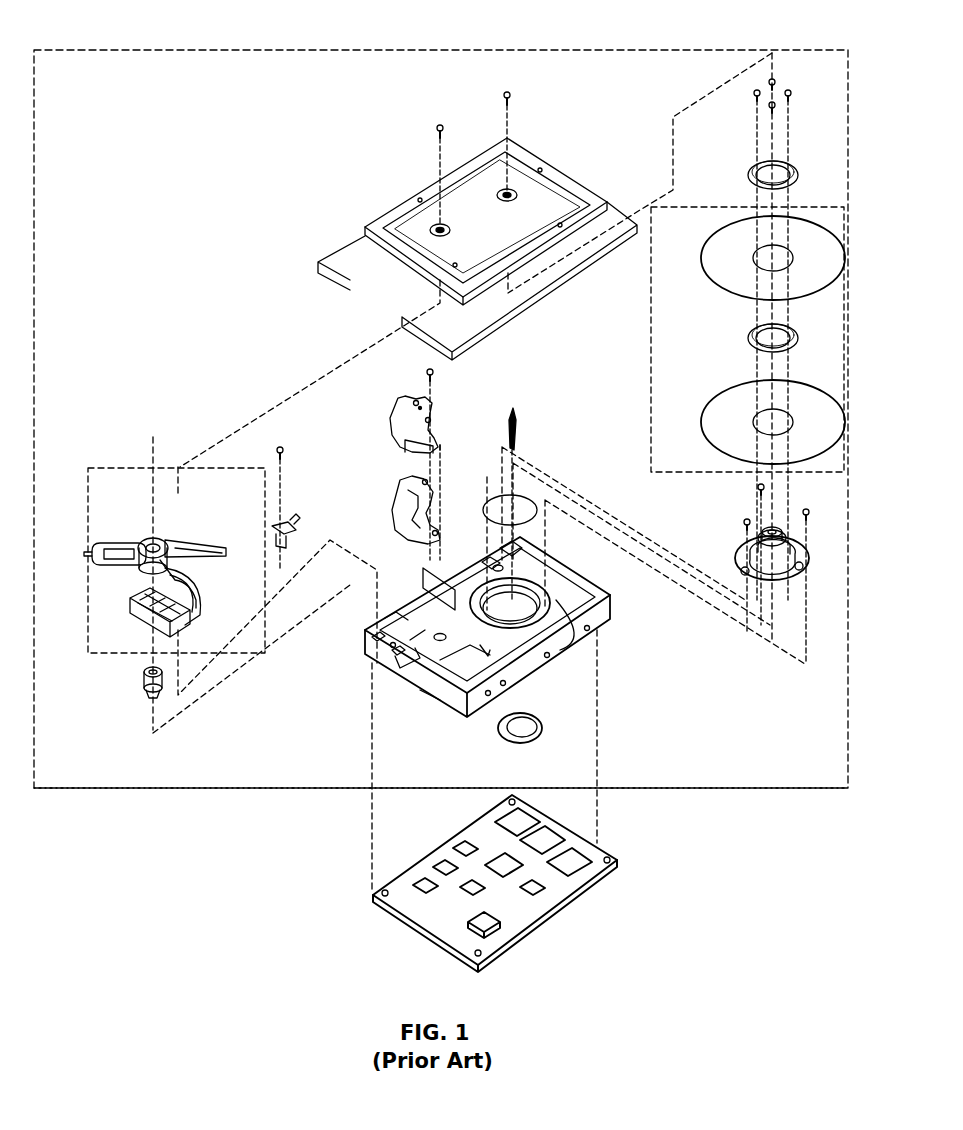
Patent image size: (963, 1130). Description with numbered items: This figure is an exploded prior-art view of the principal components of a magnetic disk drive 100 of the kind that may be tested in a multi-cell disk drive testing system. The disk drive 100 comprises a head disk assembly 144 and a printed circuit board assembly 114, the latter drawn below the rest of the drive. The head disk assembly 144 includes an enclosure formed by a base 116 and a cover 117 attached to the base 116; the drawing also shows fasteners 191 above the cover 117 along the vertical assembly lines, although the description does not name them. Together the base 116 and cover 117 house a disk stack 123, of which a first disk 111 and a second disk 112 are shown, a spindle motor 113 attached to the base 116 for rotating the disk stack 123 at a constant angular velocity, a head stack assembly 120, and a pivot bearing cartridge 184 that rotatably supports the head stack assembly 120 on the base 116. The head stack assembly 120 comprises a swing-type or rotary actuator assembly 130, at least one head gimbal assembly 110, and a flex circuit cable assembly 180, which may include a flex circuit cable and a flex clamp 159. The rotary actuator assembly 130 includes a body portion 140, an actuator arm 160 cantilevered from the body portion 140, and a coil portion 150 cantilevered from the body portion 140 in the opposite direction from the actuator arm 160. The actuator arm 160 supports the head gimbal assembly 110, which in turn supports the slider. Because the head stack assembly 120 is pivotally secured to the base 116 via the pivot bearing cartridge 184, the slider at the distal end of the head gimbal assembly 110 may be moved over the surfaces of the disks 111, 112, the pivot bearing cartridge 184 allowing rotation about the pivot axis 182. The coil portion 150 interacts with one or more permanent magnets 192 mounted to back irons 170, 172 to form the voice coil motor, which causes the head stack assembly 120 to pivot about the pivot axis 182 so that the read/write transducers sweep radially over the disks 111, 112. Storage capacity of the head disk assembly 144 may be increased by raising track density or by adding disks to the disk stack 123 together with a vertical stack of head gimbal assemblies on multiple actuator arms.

The magnetic disk drive 100 is at (184, 34).
The head gimbal assembly 110 is at (203, 547).
The first disk 111 is at (712, 398).
The second disk 112 is at (723, 288).
The spindle motor 113 is at (742, 552).
The printed circuit board assembly 114 is at (543, 912).
The base 116 is at (600, 630).
The cover 117 is at (386, 210).
The head stack assembly 120 is at (120, 468).
The disk stack 123 is at (651, 330).
The rotary actuator assembly 130 is at (195, 510).
The body portion 140 is at (163, 537).
The head disk assembly 144 is at (733, 787).
The coil portion 150 is at (110, 575).
The flex clamp 159 is at (153, 618).
The actuator arm 160 is at (188, 557).
The back iron 170 is at (390, 412).
The back iron 172 is at (418, 478).
The flex circuit cable assembly 180 is at (186, 616).
The pivot axis 182 is at (160, 437).
The pivot bearing cartridge 184 is at (150, 682).
The cover screws 191 is at (440, 124).
The permanent magnets 192 is at (407, 507).